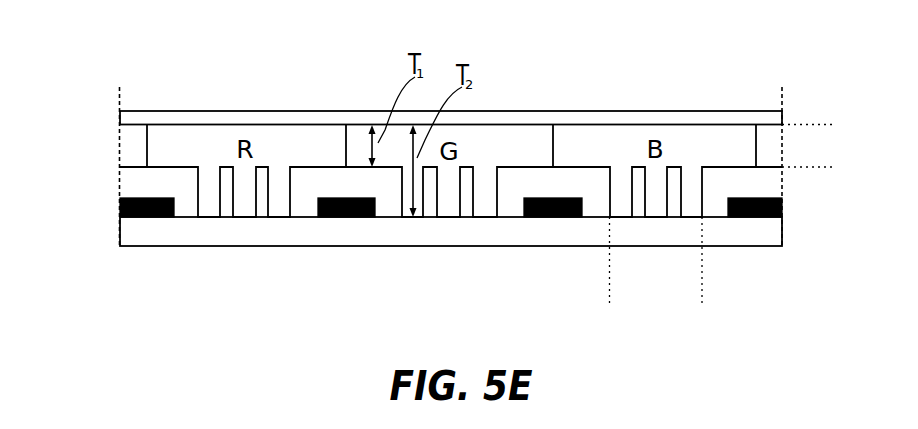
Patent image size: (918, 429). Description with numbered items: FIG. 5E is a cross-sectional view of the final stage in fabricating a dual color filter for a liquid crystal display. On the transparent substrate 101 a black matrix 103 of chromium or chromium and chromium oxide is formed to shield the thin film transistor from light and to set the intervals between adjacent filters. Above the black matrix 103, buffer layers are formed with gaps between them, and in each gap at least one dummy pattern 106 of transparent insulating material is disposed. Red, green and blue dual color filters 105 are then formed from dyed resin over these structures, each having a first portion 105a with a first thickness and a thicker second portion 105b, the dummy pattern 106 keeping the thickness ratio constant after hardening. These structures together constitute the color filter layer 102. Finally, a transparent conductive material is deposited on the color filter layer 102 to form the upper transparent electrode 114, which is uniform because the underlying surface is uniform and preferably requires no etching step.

The transparent substrate 101 is at (754, 228).
The color filter layer 102 is at (107, 124).
The black matrix 103 is at (336, 217).
The dual color filter 105 is at (533, 133).
The first portion 105a is at (813, 128).
The second portion 105b is at (613, 289).
The dummy pattern 106 is at (467, 173).
The upper transparent electrode 114 is at (652, 115).